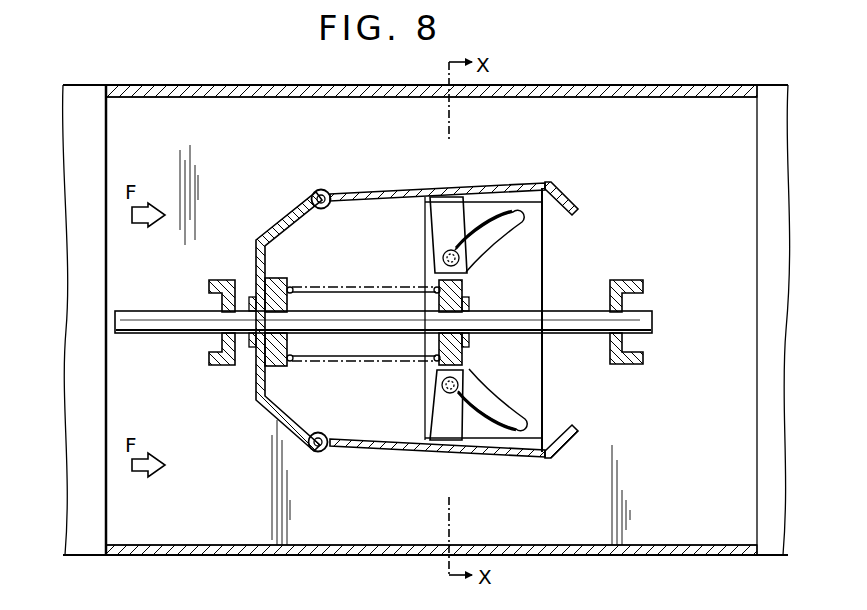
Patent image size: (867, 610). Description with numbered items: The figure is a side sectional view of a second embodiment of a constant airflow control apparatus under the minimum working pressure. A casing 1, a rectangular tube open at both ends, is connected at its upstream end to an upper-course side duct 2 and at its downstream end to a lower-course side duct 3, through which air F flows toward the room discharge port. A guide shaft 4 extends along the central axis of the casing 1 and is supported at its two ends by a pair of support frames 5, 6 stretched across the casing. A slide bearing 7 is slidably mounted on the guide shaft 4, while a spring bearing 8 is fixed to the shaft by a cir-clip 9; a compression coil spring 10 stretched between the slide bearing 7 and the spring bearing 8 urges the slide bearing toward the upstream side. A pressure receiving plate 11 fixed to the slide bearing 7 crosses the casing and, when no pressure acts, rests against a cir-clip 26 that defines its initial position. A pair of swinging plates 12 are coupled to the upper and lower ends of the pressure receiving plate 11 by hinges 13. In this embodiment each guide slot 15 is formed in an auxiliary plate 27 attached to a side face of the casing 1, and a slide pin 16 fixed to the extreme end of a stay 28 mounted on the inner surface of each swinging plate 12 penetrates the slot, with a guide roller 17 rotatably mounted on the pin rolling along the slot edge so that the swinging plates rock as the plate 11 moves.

The casing 1 is at (248, 105).
The upper-course side duct 2 is at (82, 97).
The lower-course side duct 3 is at (770, 92).
The guide shaft 4 is at (178, 332).
The support frame 5 is at (222, 280).
The support frame 6 is at (636, 280).
The slide bearing 7 is at (276, 278).
The spring bearing 8 is at (464, 282).
The cir-clip 9 is at (468, 345).
The compression coil spring 10 is at (344, 284).
The pressure receiving plate 11 is at (280, 224).
The swinging plate 12 is at (383, 190).
The hinge 13 is at (324, 190).
The guide slot 15 is at (500, 224).
The slide pin 16 is at (444, 260).
The guide roller 17 is at (446, 254).
The cir-clip 26 is at (252, 348).
The auxiliary plate 27 is at (530, 268).
The stay 28 is at (458, 196).